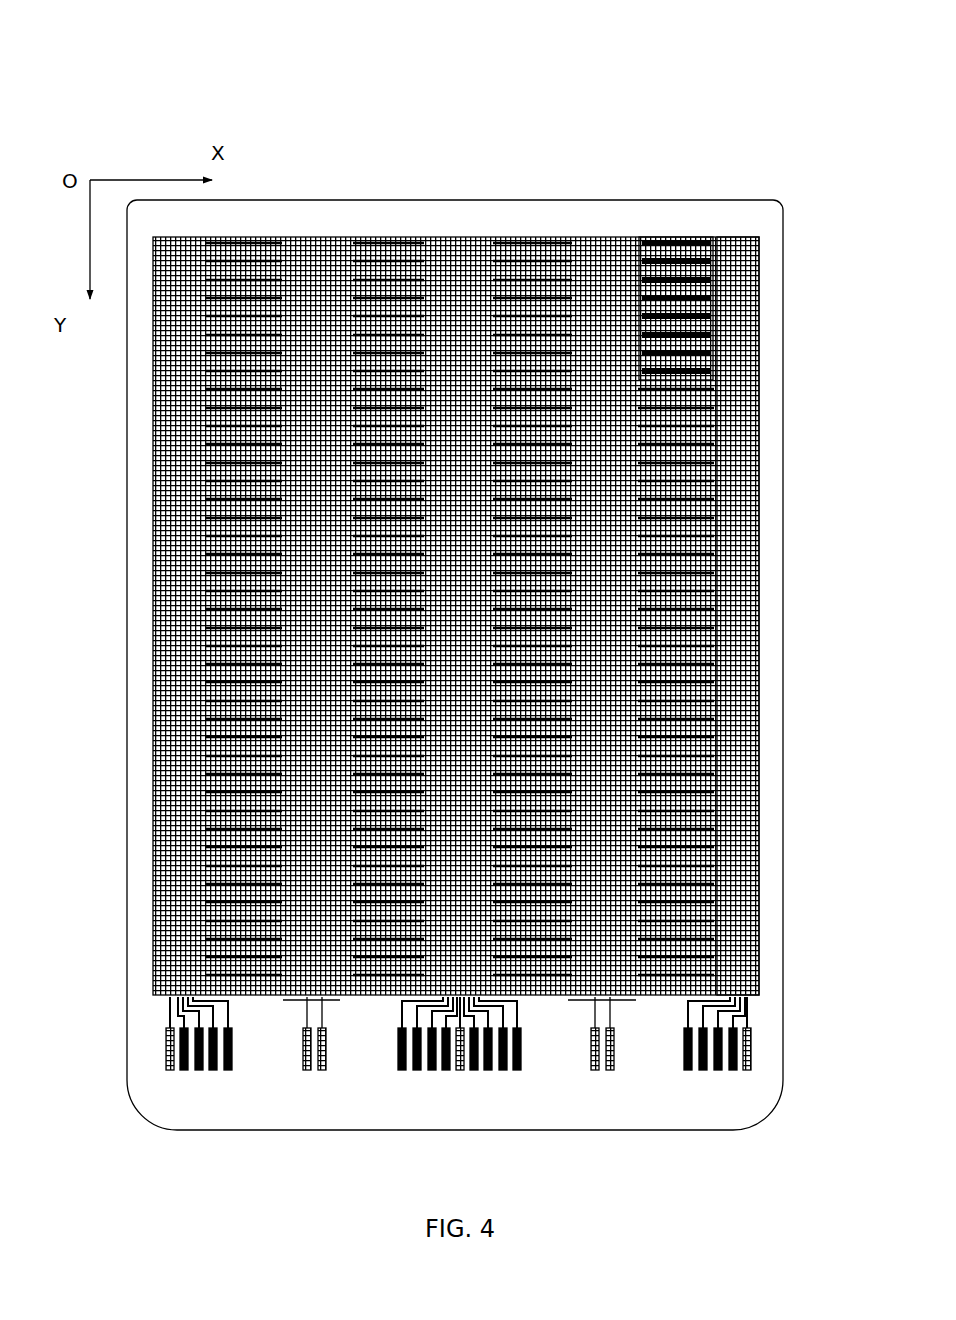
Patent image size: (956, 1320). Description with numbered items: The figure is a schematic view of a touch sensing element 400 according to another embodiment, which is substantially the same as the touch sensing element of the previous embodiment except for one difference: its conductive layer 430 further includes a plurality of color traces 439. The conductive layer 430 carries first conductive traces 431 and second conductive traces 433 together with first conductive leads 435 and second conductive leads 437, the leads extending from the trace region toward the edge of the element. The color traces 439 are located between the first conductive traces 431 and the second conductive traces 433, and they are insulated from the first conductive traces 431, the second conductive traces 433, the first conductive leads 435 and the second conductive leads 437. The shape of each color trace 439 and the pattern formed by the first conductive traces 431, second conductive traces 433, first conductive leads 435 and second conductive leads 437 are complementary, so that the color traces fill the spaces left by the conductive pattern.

The touch sensing element 400 is at (495, 594).
The conductive layer 430 is at (344, 210).
The first conductive traces 431 is at (490, 542).
The second conductive traces 433 is at (688, 240).
The first conductive leads 435 is at (632, 1002).
The second conductive leads 437 is at (752, 1000).
The color traces 439 is at (745, 240).